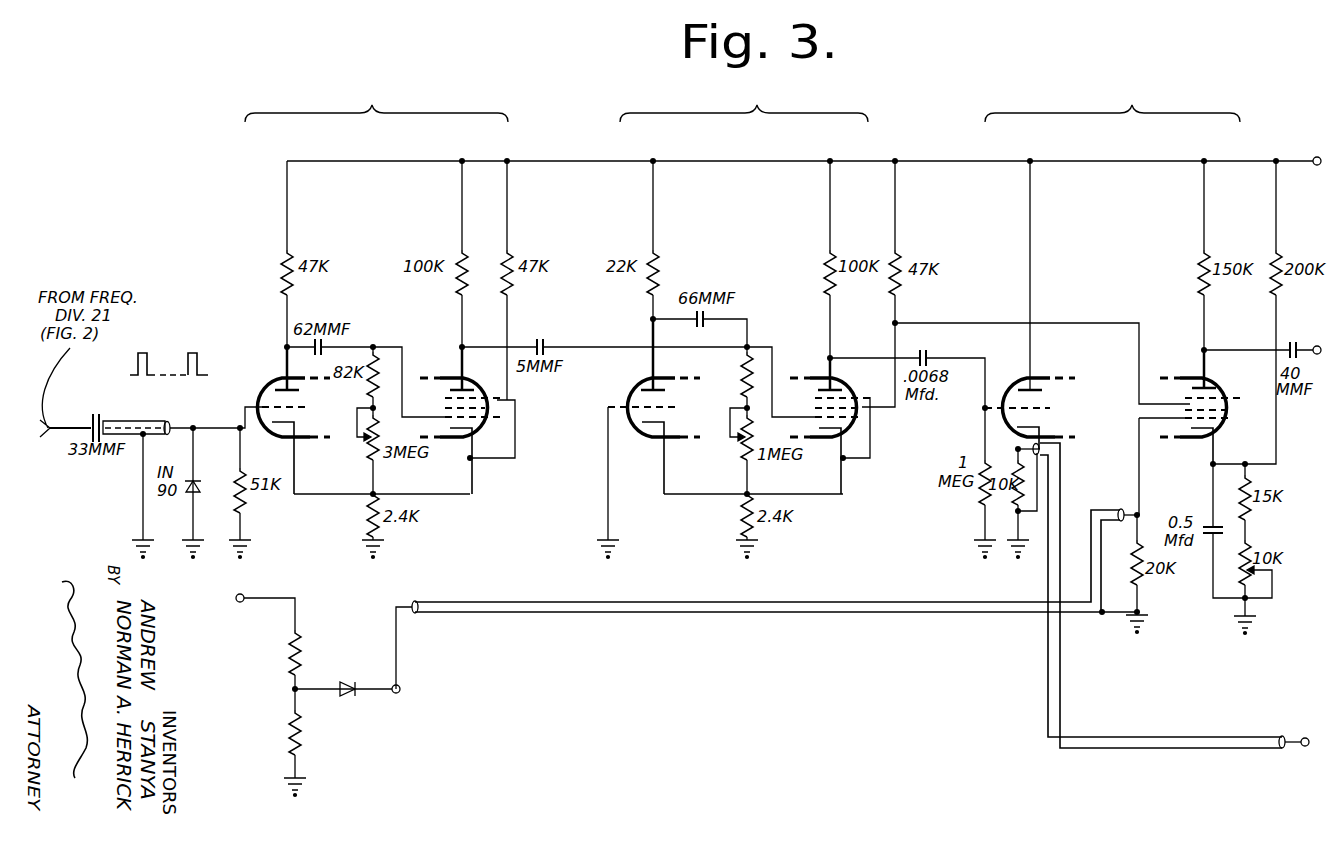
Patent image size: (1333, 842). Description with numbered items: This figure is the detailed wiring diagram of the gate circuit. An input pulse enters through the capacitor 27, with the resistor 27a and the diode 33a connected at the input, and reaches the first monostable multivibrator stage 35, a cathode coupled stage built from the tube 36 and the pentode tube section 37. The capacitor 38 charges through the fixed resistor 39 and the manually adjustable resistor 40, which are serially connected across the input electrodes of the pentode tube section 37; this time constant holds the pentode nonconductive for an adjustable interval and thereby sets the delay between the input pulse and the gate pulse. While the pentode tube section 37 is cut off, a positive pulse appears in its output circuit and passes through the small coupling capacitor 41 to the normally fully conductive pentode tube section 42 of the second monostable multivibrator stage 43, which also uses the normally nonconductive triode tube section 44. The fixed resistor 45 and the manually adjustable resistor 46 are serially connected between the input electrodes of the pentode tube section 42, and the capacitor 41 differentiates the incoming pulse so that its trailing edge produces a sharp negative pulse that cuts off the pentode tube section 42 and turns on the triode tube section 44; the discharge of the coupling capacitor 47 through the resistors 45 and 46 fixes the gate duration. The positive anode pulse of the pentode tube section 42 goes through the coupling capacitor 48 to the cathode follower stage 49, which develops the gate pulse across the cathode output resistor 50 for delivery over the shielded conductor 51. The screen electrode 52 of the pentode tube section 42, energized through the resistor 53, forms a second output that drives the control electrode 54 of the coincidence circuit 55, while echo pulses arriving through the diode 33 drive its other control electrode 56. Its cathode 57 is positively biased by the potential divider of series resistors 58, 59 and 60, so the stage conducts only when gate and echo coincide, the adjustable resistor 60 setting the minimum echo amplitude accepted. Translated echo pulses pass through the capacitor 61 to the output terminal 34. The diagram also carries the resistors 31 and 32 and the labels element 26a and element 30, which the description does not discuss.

The input terminal 26a is at (240, 593).
The capacitor 27 is at (80, 428).
The resistor 27a is at (246, 500).
The coaxial cable 30 is at (400, 690).
The resistor 31 is at (288, 646).
The resistor 32 is at (288, 725).
The diode 33 is at (348, 697).
The diode 33a is at (203, 484).
The output terminal 34 is at (1318, 346).
The multivibrator stage 35 is at (380, 97).
The tube 36 is at (274, 378).
The pentode tube section 37 is at (483, 437).
The capacitor 38 is at (319, 352).
The fixed resistor 39 is at (378, 372).
The manually adjustable resistor 40 is at (363, 452).
The coupling capacitor 41 is at (542, 340).
The pentode tube section 42 is at (852, 438).
The second monostable multivibrator stage 43 is at (769, 97).
The triode tube section 44 is at (632, 438).
The fixed resistor 45 is at (744, 388).
The manually adjustable resistor 46 is at (740, 450).
The coupling capacitor 47 is at (702, 328).
The coupling capacitor 48 is at (925, 352).
The cathode follower stage 49 is at (1001, 430).
The cathode output resistor 50 is at (1012, 508).
The shielded conductor 51 is at (1046, 663).
The screen electrode 52 is at (838, 405).
The resistor 53 is at (902, 263).
The control electrode 54 is at (1212, 406).
The coincidence circuit 55 is at (1142, 97).
The control electrode 56 is at (1215, 412).
The cathode 57 is at (1208, 433).
The resistor 58 is at (1278, 258).
The resistor 59 is at (1249, 475).
The resistor 60 is at (1242, 585).
The capacitor 61 is at (1292, 341).